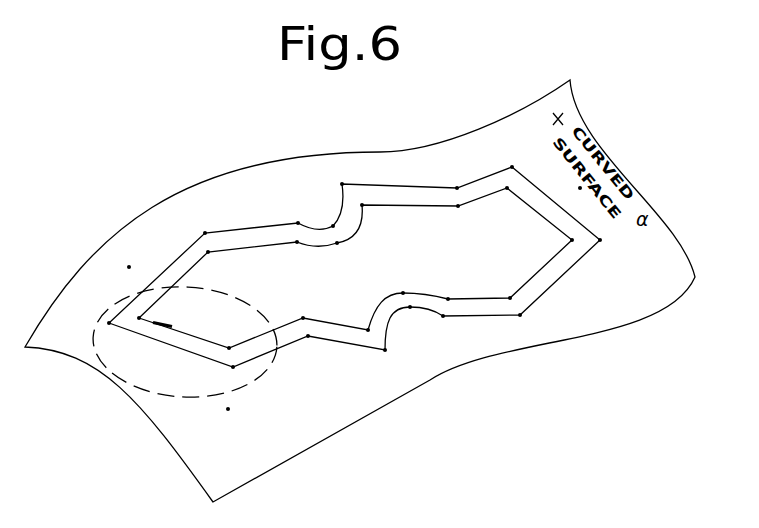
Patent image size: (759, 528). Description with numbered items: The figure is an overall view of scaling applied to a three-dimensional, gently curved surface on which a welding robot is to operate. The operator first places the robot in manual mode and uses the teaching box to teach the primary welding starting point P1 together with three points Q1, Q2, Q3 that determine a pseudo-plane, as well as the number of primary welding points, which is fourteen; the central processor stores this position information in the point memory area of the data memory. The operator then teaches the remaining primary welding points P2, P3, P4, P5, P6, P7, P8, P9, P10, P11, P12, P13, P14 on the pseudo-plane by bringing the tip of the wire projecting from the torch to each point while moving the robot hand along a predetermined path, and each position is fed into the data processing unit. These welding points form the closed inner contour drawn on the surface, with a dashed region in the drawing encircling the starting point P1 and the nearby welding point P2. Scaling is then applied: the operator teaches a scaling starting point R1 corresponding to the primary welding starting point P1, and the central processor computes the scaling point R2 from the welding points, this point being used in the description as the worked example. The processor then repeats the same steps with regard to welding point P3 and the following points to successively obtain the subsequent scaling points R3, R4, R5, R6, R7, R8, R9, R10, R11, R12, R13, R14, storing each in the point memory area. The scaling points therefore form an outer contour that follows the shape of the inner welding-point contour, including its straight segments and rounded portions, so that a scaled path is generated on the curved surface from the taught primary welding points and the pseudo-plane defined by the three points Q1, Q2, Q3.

The primary welding starting point P1 is at (153, 315).
The primary welding point P2 is at (230, 336).
The primary welding point P3 is at (304, 308).
The primary welding point P4 is at (359, 320).
The primary welding point P5 is at (404, 283).
The primary welding point P6 is at (452, 287).
The primary welding point P7 is at (505, 287).
The primary welding point P8 is at (555, 240).
The primary welding point P9 is at (504, 201).
The primary welding point P10 is at (460, 218).
The primary welding point P11 is at (375, 215).
The primary welding point P12 is at (345, 255).
The primary welding point P13 is at (297, 254).
The primary welding point P14 is at (219, 263).
The scaling starting point R1 is at (105, 335).
The scaling point R2 is at (229, 378).
The scaling point R3 is at (309, 348).
The scaling point R4 is at (387, 361).
The scaling point R5 is at (412, 320).
The scaling point R6 is at (450, 328).
The scaling point R7 is at (524, 327).
The scaling point R8 is at (611, 242).
The scaling point R9 is at (512, 156).
The scaling point R10 is at (458, 175).
The scaling point R11 is at (339, 175).
The scaling point R12 is at (324, 215).
The scaling point R13 is at (285, 213).
The scaling point R14 is at (208, 222).
The pseudo-plane determining point Q1 is at (141, 259).
The pseudo-plane determining point Q2 is at (240, 410).
The pseudo-plane determining point Q3 is at (586, 198).